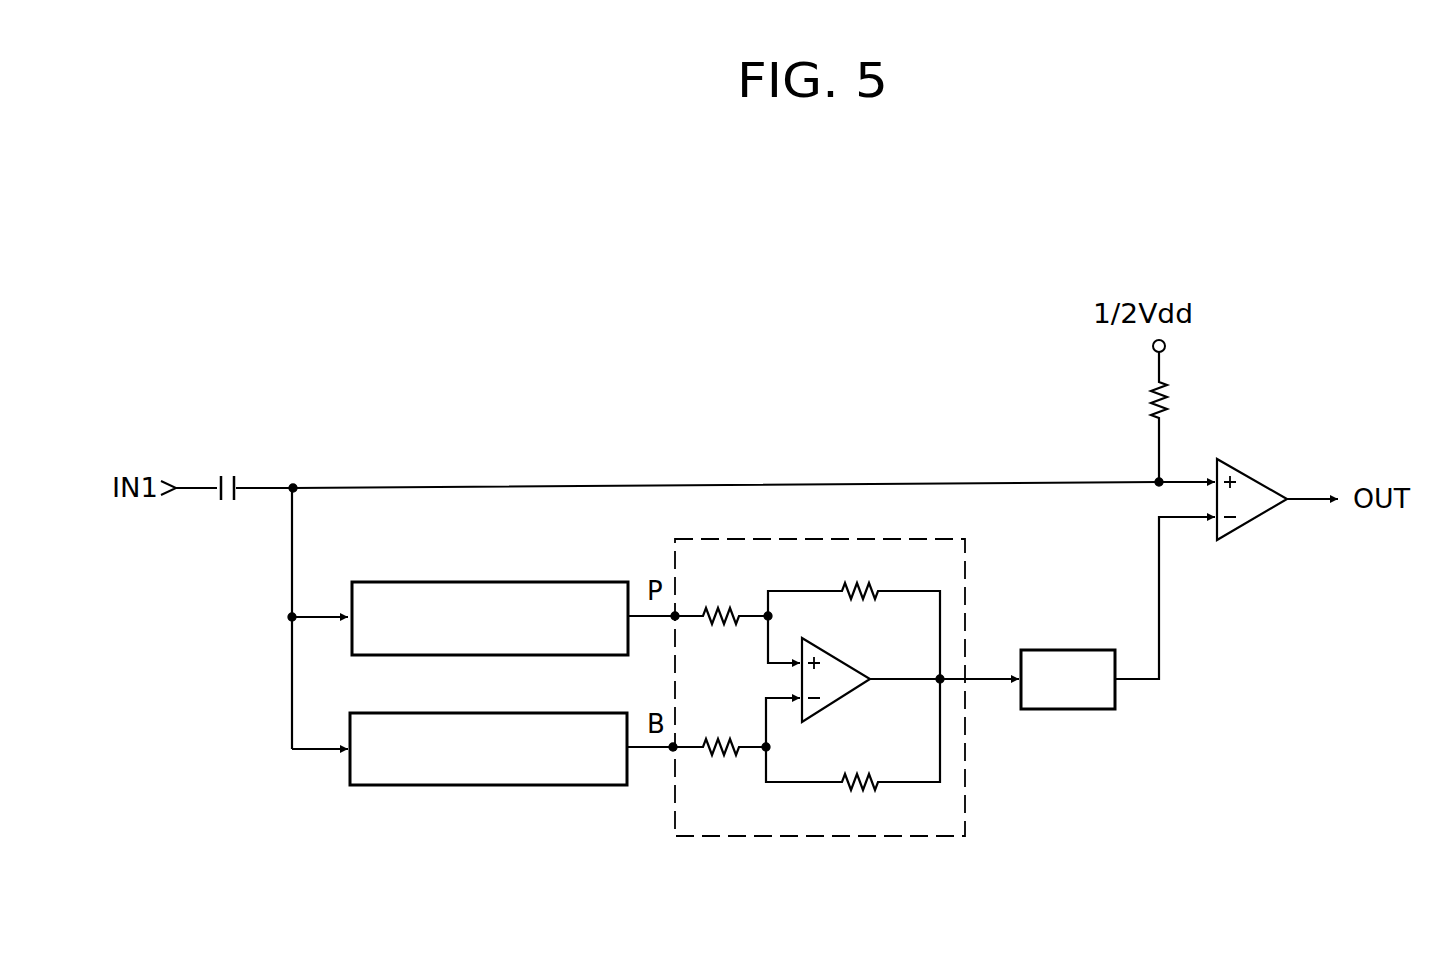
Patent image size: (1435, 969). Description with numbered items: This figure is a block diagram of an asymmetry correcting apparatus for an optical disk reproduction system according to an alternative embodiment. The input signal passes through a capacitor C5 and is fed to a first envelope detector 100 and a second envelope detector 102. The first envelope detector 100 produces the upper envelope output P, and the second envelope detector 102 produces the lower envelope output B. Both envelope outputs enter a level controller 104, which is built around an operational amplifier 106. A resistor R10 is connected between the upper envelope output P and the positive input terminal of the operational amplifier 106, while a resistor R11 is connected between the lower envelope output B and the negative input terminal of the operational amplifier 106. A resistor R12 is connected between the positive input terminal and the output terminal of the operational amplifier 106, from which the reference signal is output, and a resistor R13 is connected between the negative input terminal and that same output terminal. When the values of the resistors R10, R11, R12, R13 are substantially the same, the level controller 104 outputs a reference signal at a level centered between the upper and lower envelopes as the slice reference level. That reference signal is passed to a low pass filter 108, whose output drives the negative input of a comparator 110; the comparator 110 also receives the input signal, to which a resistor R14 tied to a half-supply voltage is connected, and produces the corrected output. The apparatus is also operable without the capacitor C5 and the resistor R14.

The first envelope detector 100 is at (553, 582).
The second envelope detector 102 is at (515, 785).
The level controller 104 is at (878, 836).
The operational amplifier 106 is at (840, 697).
The low pass filter 108 is at (1069, 650).
The comparator 110 is at (1258, 518).
The capacitor C5 is at (226, 469).
The resistor R10 is at (698, 599).
The resistor R11 is at (696, 766).
The resistor R12 is at (854, 613).
The resistor R13 is at (853, 754).
The resistor R14 is at (1132, 411).